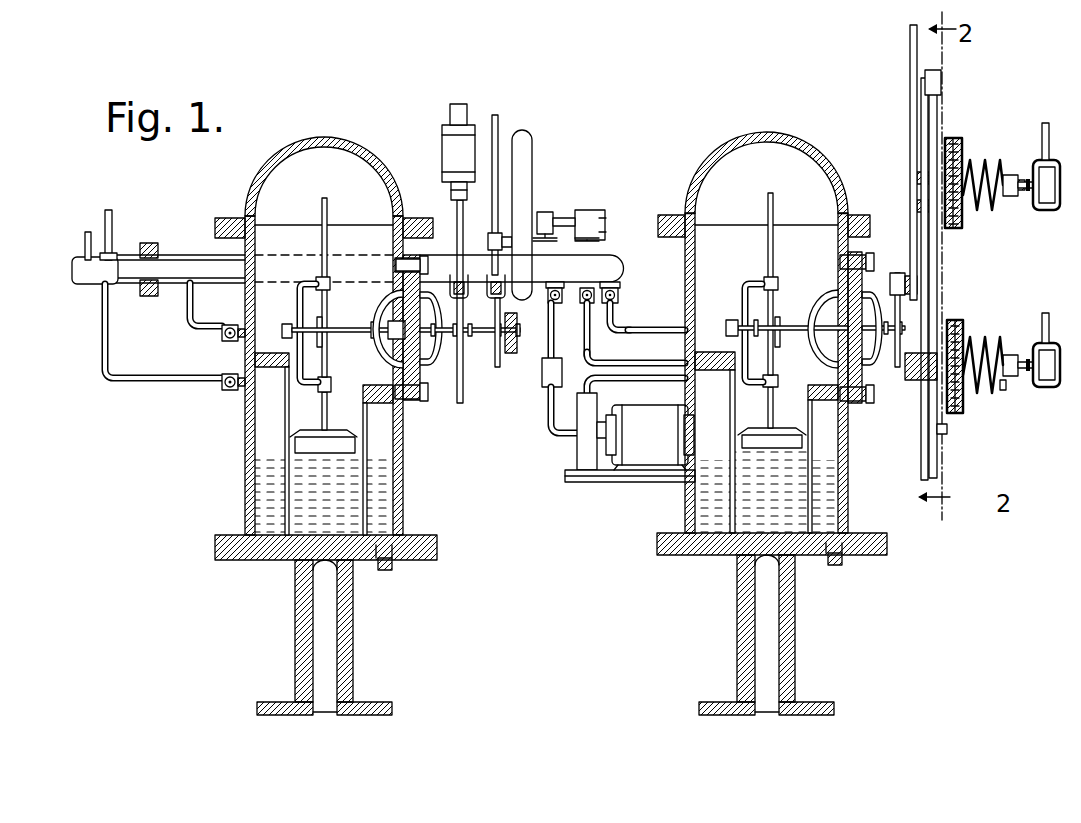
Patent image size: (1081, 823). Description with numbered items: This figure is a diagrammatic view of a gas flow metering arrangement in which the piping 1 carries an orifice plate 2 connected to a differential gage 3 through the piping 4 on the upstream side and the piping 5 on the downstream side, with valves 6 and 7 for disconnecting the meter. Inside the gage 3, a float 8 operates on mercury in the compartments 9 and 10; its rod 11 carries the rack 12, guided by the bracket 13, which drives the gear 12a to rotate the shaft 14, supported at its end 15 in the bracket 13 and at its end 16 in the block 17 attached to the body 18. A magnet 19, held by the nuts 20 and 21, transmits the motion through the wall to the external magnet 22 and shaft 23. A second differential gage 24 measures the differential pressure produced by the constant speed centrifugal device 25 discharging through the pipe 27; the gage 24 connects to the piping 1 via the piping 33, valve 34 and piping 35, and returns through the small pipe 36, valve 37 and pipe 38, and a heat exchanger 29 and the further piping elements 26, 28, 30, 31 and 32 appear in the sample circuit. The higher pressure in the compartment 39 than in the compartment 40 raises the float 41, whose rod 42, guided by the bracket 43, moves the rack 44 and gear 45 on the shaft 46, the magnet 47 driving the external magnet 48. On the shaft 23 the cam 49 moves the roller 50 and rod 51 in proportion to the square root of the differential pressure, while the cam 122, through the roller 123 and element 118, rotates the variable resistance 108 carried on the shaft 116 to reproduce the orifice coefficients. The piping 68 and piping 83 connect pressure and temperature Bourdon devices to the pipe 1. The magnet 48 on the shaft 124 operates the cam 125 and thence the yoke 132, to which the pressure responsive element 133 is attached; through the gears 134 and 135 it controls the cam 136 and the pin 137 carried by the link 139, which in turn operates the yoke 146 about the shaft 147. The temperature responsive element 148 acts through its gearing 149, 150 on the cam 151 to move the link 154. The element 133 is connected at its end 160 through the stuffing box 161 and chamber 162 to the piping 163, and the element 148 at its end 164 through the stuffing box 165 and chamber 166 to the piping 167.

The piping 1 is at (85, 281).
The orifice plate 2 is at (152, 247).
The differential gage 3 is at (321, 136).
The piping 4 is at (132, 386).
The piping 5 is at (188, 313).
The valve 6 is at (225, 392).
The valve 7 is at (222, 341).
The float 8 is at (324, 455).
The compartment 9 is at (289, 508).
The compartment 10 is at (266, 475).
The rod 11 is at (320, 415).
The rack 12 is at (328, 310).
The gear 12a is at (319, 340).
The bracket 13 is at (299, 304).
The shaft 14 is at (342, 335).
The end of shaft 15 is at (282, 330).
The end of shaft 16 is at (392, 352).
The block 17 is at (412, 404).
The body 18 is at (393, 236).
The magnet 19 is at (389, 294).
The nut 20 is at (385, 330).
The nut 21 is at (376, 337).
The magnet 22 is at (430, 372).
The shaft 23 is at (478, 336).
The second differential gage 24 is at (703, 165).
The centrifugal device 25 is at (576, 456).
The motor 26 is at (636, 455).
The pipe 27 is at (643, 380).
The pipe 28 is at (548, 409).
The heat exchanger 29 is at (542, 373).
The pipe 30 is at (549, 336).
The valve 31 is at (549, 305).
The connection 32 is at (558, 292).
The piping 33 is at (641, 330).
The valve 34 is at (619, 294).
The piping 35 is at (621, 279).
The pipe 36 is at (620, 367).
The valve 37 is at (586, 303).
The pipe 38 is at (586, 341).
The compartment 39 is at (702, 489).
The compartment 40 is at (747, 514).
The float 41 is at (771, 447).
The rod 42 is at (768, 418).
The bracket 43 is at (742, 293).
The rack 44 is at (781, 310).
The gear 45 is at (779, 339).
The shaft 46 is at (786, 325).
The magnet 47 is at (829, 346).
The magnet 48 is at (871, 290).
The cam 49 is at (460, 404).
The roller 50 is at (455, 283).
The rod 51 is at (456, 222).
The piping 68 is at (108, 236).
The piping 83 is at (72, 269).
The variable resistance 108 is at (519, 150).
The shaft 116 is at (565, 214).
The element 118 is at (493, 120).
The cam 122 is at (497, 368).
The roller 123 is at (490, 284).
The shaft 124 is at (893, 336).
The cam 125 is at (897, 286).
The yoke 132 is at (922, 386).
The pressure responsive element 133 is at (977, 342).
The gear 134 is at (963, 319).
The gear 135 is at (951, 321).
The cam 136 is at (937, 283).
The pin 137 is at (944, 431).
The link 139 is at (927, 240).
The yoke 146 is at (920, 206).
The shaft 147 is at (923, 180).
The temperature responsive element 148 is at (975, 168).
The gearing 149 is at (962, 153).
The gearing 150 is at (955, 141).
The cam 151 is at (937, 100).
The link 154 is at (913, 131).
The end 160 is at (1003, 387).
The stuffing box 161 is at (1024, 372).
The chamber 162 is at (1047, 388).
The piping 163 is at (1045, 313).
The end 164 is at (1008, 198).
The stuffing box 165 is at (1022, 201).
The chamber 166 is at (1048, 212).
The piping 167 is at (1042, 134).